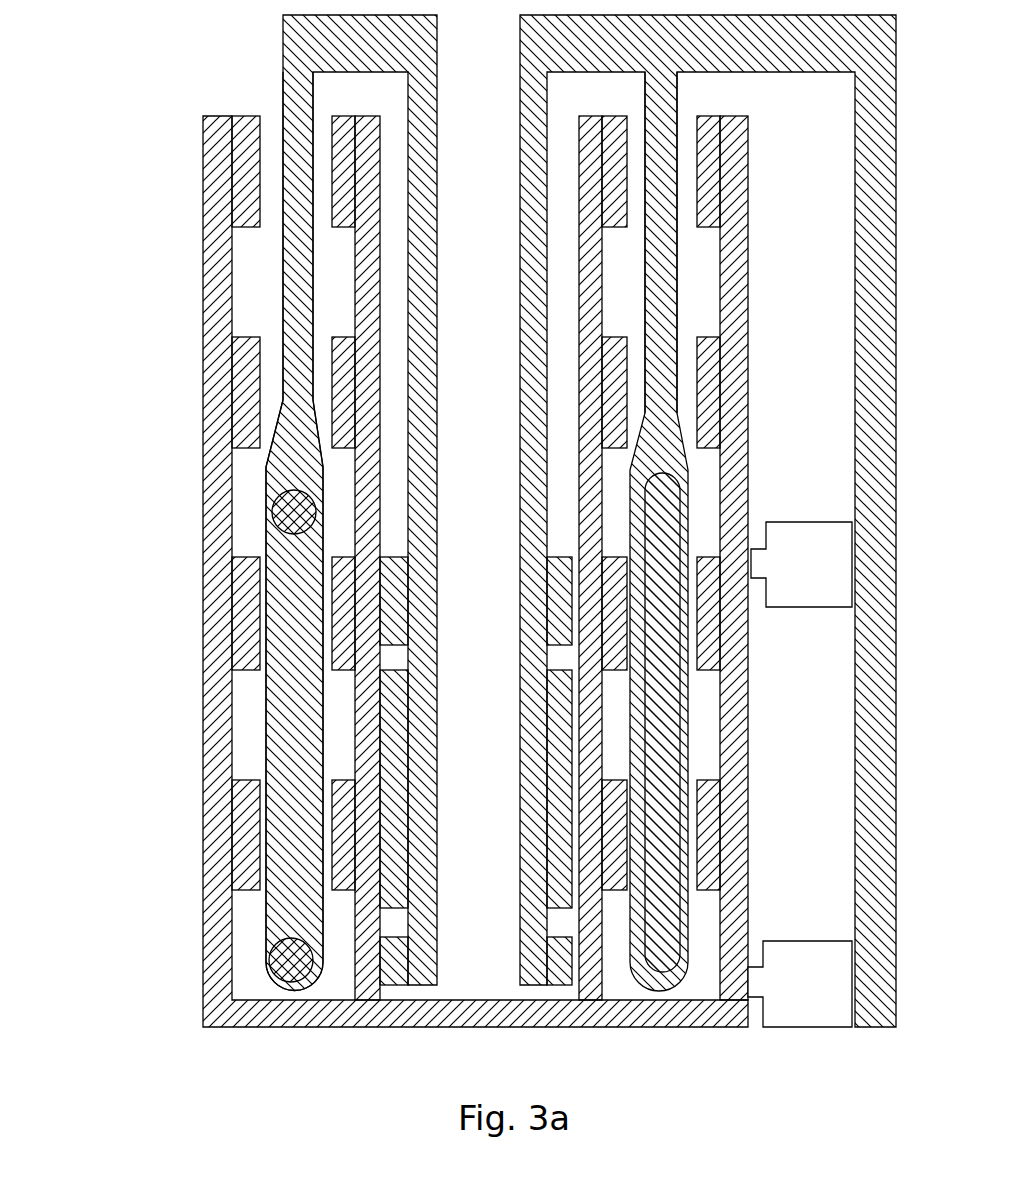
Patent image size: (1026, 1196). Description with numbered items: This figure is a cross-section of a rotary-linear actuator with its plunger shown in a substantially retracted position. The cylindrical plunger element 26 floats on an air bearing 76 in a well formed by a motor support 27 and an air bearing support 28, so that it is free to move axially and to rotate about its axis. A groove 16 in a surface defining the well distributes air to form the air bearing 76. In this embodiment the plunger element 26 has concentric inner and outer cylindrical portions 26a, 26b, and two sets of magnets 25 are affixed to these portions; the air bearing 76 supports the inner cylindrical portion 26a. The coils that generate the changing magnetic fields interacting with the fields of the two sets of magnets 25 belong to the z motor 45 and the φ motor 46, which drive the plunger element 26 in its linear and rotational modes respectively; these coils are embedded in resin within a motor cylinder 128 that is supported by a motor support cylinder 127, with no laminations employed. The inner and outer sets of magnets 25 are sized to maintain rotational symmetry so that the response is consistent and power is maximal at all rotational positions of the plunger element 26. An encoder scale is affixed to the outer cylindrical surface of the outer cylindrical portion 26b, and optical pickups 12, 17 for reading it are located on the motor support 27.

The optical pickup 12 is at (815, 572).
The groove 16 is at (520, 920).
The optical pickup 17 is at (815, 990).
The magnets 25 is at (255, 108).
The plunger element 26 is at (652, 1027).
The inner cylindrical portion 26a is at (378, 245).
The outer cylindrical portion 26b is at (750, 322).
The motor support 27 is at (857, 178).
The air bearing support 28 is at (440, 118).
The z motor 45 is at (296, 994).
The φ motor 46 is at (644, 990).
The air bearing 76 is at (566, 983).
The motor support cylinder 127 is at (313, 298).
The motor cylinder 128 is at (545, 643).